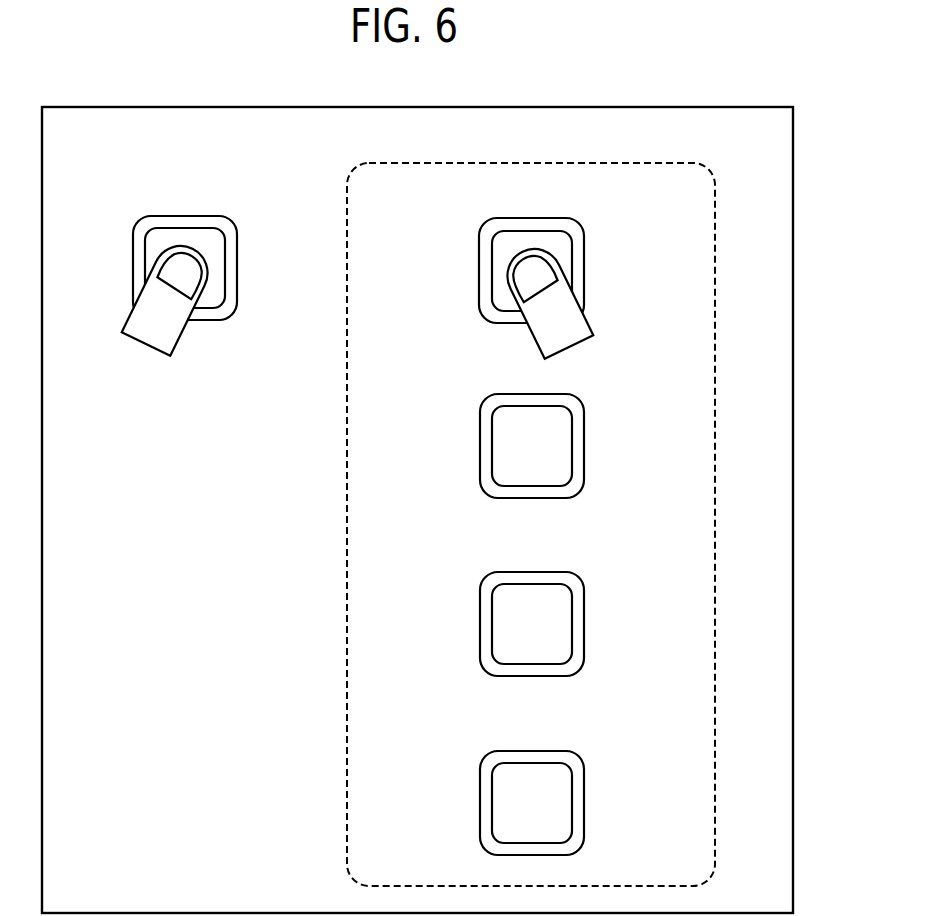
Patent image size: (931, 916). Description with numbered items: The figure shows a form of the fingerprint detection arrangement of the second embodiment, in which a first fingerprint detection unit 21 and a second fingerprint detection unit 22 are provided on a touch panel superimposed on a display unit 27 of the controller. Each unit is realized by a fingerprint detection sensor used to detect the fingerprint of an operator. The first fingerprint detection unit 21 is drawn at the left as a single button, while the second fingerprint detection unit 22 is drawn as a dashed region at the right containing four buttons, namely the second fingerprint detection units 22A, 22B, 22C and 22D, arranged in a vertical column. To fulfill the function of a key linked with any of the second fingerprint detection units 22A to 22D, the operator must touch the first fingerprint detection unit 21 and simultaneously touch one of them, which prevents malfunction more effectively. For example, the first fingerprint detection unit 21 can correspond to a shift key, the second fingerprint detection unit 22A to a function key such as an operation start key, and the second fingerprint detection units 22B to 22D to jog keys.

The first fingerprint detection unit 21 is at (146, 237).
The second fingerprint detection unit 22 is at (690, 163).
The second fingerprint detection unit 22A is at (567, 239).
The second fingerprint detection unit 22B is at (570, 420).
The second fingerprint detection unit 22C is at (570, 598).
The second fingerprint detection unit 22D is at (570, 775).
The display unit 27 is at (794, 163).